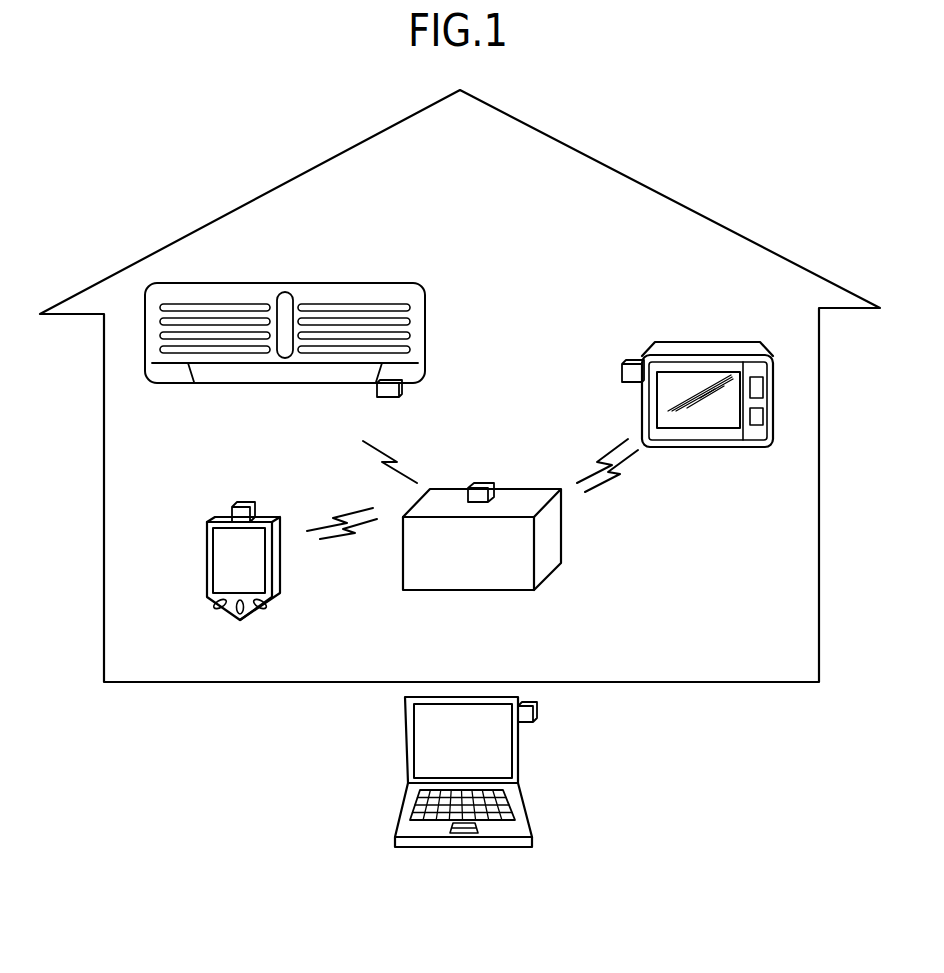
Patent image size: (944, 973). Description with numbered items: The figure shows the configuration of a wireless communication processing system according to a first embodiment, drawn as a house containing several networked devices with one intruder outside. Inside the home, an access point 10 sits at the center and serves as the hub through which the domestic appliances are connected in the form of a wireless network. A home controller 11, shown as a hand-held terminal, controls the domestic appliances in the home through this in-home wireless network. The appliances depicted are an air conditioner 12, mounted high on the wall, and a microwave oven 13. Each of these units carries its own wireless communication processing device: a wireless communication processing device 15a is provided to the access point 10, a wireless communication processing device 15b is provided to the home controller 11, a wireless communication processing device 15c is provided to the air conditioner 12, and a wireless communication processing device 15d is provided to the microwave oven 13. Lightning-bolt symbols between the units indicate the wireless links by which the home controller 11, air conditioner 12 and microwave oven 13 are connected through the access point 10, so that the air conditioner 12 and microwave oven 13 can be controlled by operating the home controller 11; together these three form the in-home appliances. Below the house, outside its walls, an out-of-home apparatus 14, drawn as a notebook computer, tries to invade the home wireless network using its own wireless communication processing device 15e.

The access point 10 is at (563, 525).
The home controller 11 is at (280, 555).
The air conditioner 12 is at (292, 290).
The microwave oven 13 is at (712, 342).
The out-of-home apparatus 14 is at (405, 742).
The wireless communication processing device 15a is at (490, 488).
The wireless communication processing device 15b is at (232, 511).
The wireless communication processing device 15c is at (374, 391).
The wireless communication processing device 15d is at (623, 371).
The wireless communication processing device 15e is at (538, 712).